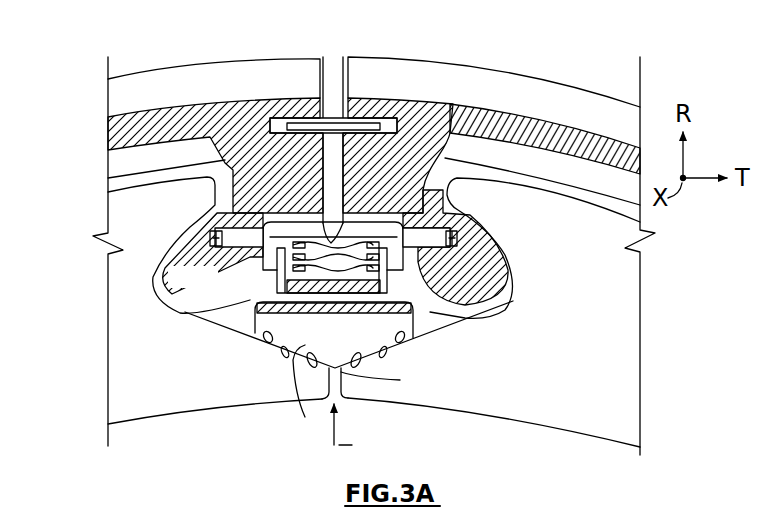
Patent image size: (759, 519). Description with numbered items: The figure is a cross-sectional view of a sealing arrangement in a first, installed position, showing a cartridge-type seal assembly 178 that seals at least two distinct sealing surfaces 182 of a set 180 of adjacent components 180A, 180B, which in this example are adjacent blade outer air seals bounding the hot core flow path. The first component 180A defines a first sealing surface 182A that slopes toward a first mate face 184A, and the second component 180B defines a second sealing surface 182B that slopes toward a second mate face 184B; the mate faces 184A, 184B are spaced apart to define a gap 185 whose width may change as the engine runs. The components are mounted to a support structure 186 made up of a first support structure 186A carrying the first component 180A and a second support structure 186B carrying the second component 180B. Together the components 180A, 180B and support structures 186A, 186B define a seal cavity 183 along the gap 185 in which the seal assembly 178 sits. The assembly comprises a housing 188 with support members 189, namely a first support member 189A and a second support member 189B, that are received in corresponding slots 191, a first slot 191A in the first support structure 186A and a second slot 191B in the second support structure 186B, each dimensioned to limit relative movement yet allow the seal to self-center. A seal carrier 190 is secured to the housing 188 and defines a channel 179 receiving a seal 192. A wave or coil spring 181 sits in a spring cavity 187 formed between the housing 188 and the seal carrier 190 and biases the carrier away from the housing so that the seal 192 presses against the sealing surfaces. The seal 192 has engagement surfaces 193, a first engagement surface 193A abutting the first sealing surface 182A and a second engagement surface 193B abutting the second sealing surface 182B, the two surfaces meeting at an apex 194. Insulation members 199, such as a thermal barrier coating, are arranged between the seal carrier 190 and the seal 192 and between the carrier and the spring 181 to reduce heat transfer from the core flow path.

The seal assembly 178 is at (228, 193).
The channel 179 is at (428, 335).
The set of adjacent components 180 is at (103, 337).
The first component 180A is at (186, 398).
The second component 180B is at (490, 410).
The spring 181 is at (317, 238).
The sealing surfaces 182 is at (283, 355).
The first sealing surface 182A is at (270, 382).
The second sealing surface 182B is at (380, 350).
The seal cavity 183 is at (433, 310).
The first mate face 184A is at (324, 405).
The second mate face 184B is at (342, 403).
The gap 185 is at (330, 440).
The support structure 186 is at (150, 60).
The first support structure 186A is at (188, 63).
The second support structure 186B is at (463, 62).
The spring cavity 187 is at (331, 240).
The housing 188 is at (295, 205).
The support member 189 is at (256, 229).
The first support member 189A is at (225, 226).
The second support member 189B is at (432, 235).
The seal carrier 190 is at (253, 320).
The slot 191 is at (210, 239).
The first slot 191A is at (213, 253).
The second slot 191B is at (455, 238).
The seal 192 is at (266, 343).
The engagement surfaces 193 is at (281, 391).
The first engagement surface 193A is at (330, 323).
The second engagement surface 193B is at (355, 367).
The apex 194 is at (346, 376).
The insulation member 199 is at (266, 238).